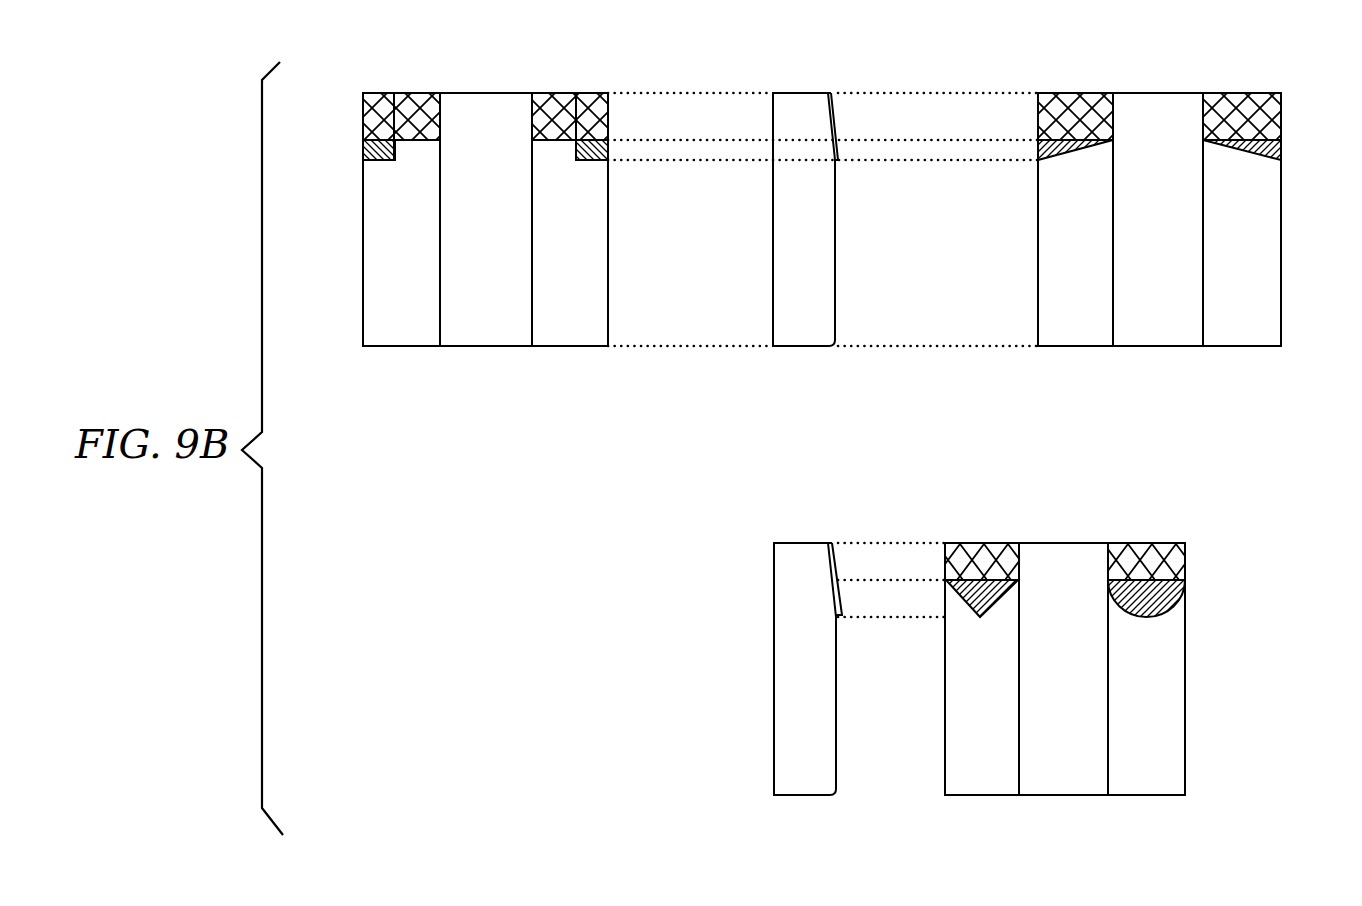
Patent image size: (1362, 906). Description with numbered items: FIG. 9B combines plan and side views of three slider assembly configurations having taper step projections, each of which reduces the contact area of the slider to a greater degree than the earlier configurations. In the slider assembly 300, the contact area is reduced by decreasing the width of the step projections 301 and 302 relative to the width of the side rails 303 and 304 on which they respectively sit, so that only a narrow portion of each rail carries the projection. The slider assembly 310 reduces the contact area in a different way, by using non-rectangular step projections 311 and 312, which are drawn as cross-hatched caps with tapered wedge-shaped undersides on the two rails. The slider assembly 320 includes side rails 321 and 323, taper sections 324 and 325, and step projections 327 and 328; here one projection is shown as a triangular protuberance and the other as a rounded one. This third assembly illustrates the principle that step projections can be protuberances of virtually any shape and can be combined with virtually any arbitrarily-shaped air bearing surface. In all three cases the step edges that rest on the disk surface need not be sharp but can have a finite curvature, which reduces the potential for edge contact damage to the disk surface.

The slider assembly 300 is at (487, 77).
The step projection 301 is at (372, 110).
The step projection 302 is at (596, 110).
The side rail 303 is at (401, 307).
The side rail 304 is at (583, 305).
The slider assembly 310 is at (1200, 81).
The step projection 311 is at (1050, 110).
The step projection 312 is at (1264, 110).
The slider assembly 320 is at (1104, 527).
The side rail 321 is at (962, 683).
The side rail 323 is at (1165, 693).
The taper section 324 is at (964, 543).
The taper section 325 is at (1172, 562).
The step projection 327 is at (962, 620).
The step projection 328 is at (1155, 615).